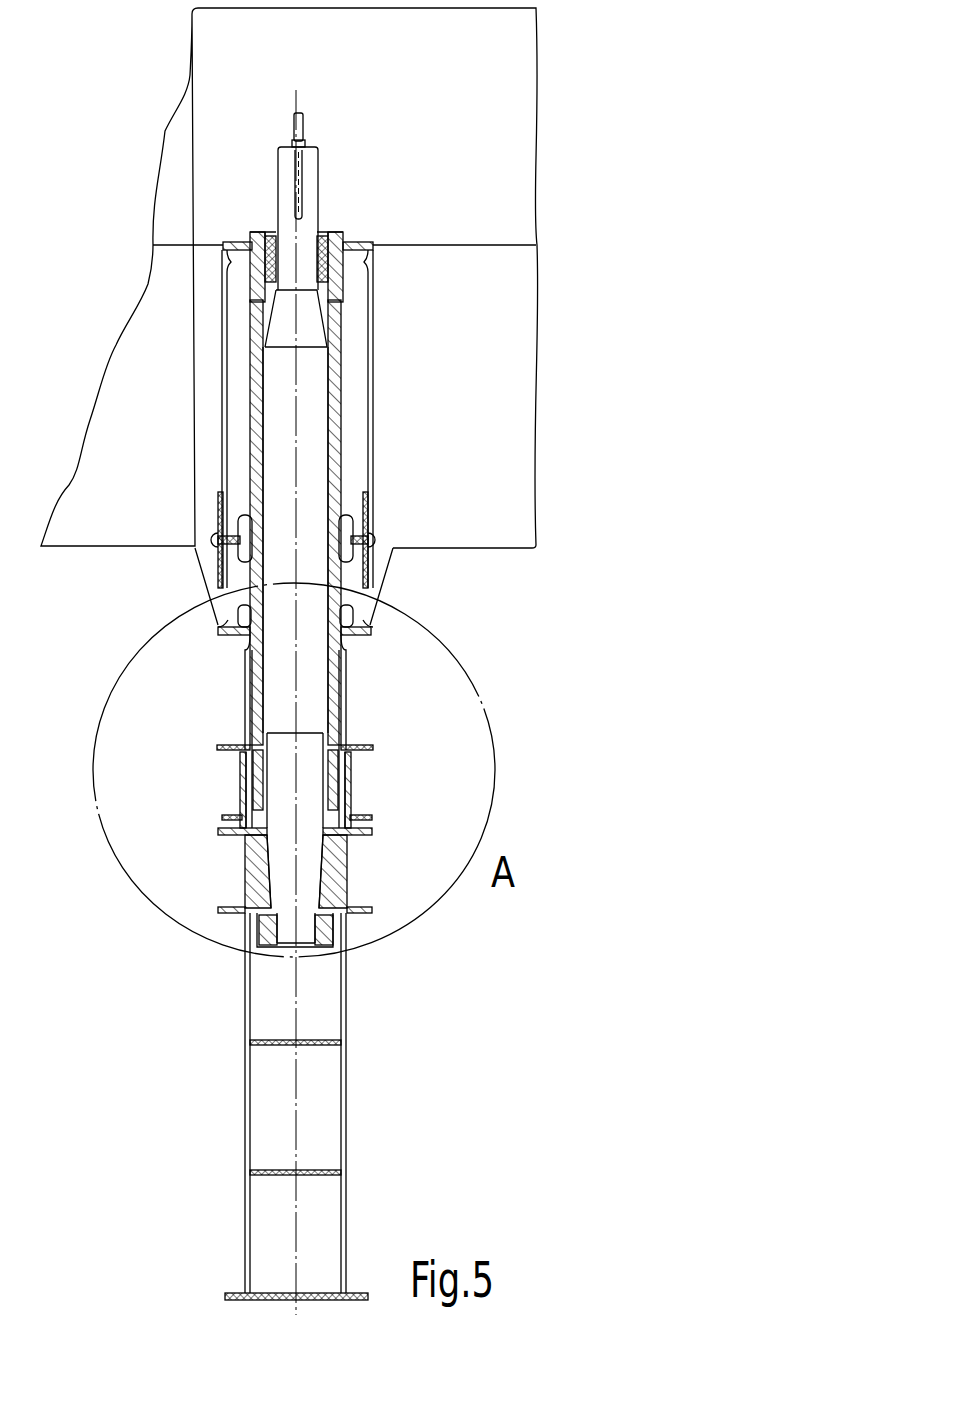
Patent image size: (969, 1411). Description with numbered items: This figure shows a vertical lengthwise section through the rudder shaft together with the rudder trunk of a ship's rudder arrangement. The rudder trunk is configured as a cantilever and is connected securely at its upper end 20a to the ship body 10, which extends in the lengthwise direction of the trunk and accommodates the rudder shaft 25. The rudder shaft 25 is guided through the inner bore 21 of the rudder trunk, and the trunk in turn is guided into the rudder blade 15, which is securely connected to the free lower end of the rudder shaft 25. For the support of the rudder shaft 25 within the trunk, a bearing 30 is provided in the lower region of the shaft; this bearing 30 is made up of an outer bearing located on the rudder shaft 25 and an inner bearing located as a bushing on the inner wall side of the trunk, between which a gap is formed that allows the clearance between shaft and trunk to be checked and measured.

The ship body 10 is at (483, 112).
The upper end 20a is at (335, 330).
The inner bore 21 is at (328, 480).
The rudder shaft 25 is at (300, 692).
The bearing 30 is at (332, 778).
The rudder blade 15 is at (346, 1135).